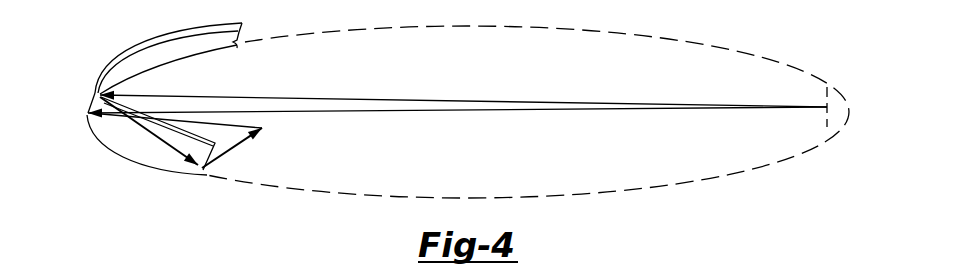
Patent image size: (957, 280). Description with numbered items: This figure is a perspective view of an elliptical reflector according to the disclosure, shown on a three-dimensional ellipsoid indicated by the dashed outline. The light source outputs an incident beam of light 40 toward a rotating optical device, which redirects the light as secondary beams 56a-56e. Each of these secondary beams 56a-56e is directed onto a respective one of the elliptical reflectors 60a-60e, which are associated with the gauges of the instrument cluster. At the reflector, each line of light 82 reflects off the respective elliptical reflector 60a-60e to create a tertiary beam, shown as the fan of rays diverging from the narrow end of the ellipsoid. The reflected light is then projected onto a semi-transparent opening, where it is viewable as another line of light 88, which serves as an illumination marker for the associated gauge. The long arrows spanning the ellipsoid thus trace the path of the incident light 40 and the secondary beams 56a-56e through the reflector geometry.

The incident beam of light 40 is at (767, 96).
The secondary beams 56a-56e is at (278, 100).
The elliptical reflectors 60a-60e is at (137, 140).
The line of light 82 is at (96, 97).
The line of light 88 is at (223, 155).